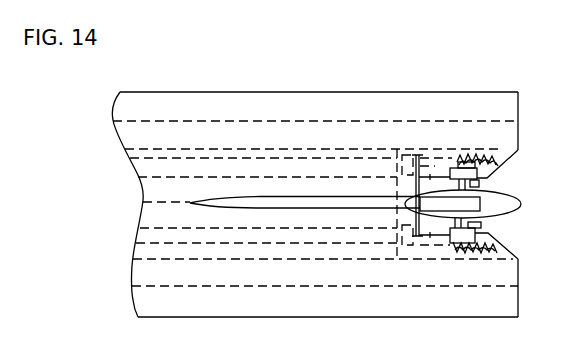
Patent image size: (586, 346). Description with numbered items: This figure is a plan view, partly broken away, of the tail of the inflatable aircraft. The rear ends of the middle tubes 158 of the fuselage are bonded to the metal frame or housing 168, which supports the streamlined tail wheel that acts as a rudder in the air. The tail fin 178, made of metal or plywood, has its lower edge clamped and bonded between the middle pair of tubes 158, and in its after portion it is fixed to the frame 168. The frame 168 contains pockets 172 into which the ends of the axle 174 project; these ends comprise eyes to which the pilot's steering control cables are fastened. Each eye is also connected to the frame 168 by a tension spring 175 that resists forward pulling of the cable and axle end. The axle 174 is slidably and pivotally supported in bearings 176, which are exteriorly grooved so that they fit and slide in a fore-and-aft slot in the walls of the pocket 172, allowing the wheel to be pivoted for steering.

The middle tubes 158 is at (364, 118).
The frame 168 is at (507, 166).
The pockets 172 is at (149, 158).
The axle 174 is at (482, 226).
The tension spring 175 is at (489, 153).
The bearings 176 is at (481, 187).
The tail fin 178 is at (238, 194).